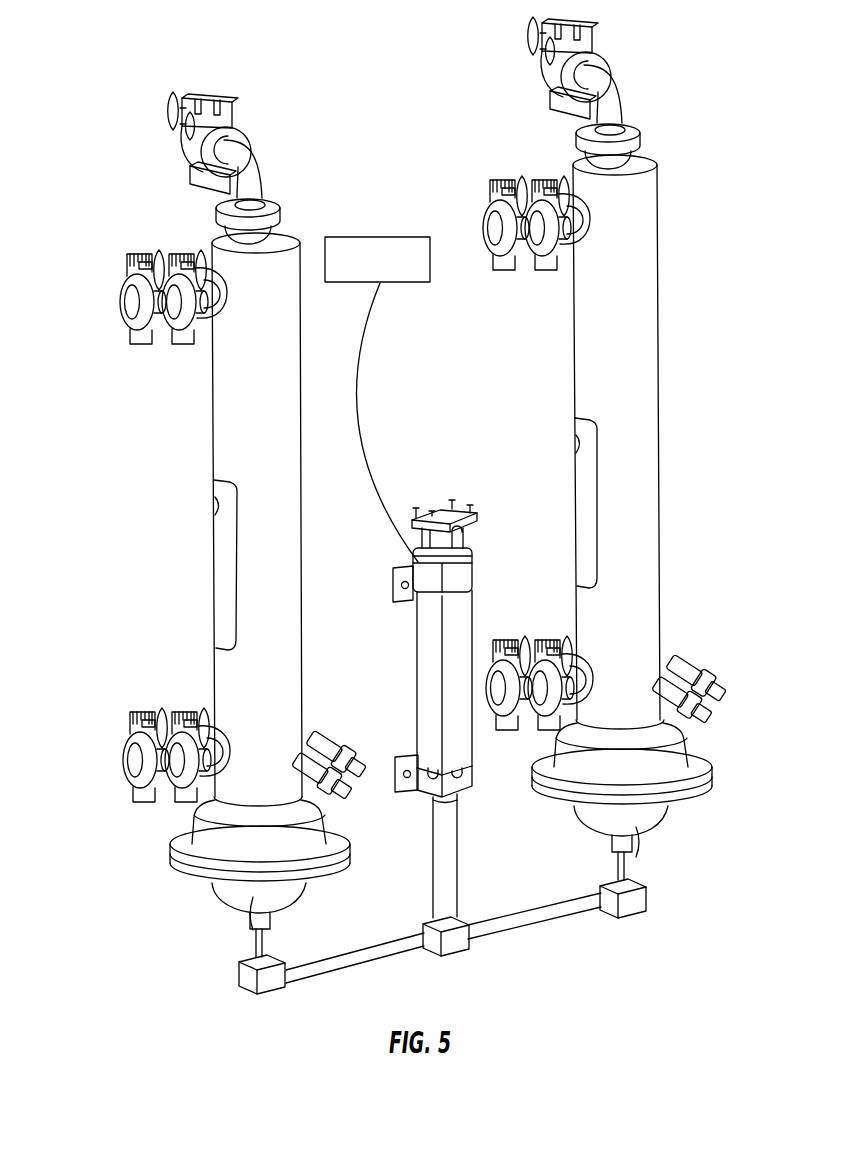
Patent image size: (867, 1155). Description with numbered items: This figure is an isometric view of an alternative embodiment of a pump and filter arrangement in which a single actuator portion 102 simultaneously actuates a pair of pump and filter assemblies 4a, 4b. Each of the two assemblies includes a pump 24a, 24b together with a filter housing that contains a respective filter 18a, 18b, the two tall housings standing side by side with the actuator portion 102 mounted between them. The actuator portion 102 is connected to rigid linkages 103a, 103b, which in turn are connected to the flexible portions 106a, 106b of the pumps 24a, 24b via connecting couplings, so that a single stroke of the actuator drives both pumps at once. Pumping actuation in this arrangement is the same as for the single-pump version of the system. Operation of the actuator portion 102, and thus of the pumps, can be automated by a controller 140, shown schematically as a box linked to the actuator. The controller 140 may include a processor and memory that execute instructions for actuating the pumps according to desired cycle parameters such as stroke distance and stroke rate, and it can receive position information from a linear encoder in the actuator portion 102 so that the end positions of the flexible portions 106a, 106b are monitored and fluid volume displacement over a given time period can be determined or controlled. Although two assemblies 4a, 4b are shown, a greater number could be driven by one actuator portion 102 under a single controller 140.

The pump and filter assembly 4a is at (630, 467).
The pump and filter assembly 4b is at (206, 543).
The filter 18a is at (659, 437).
The filter 18b is at (214, 476).
The pump 24a is at (717, 767).
The pump 24b is at (171, 884).
The actuator portion 102 is at (452, 463).
The rigid linkage 103a is at (535, 918).
The rigid linkage 103b is at (362, 947).
The flexible portion 106a is at (667, 820).
The flexible portion 106b is at (240, 908).
The controller 140 is at (430, 258).